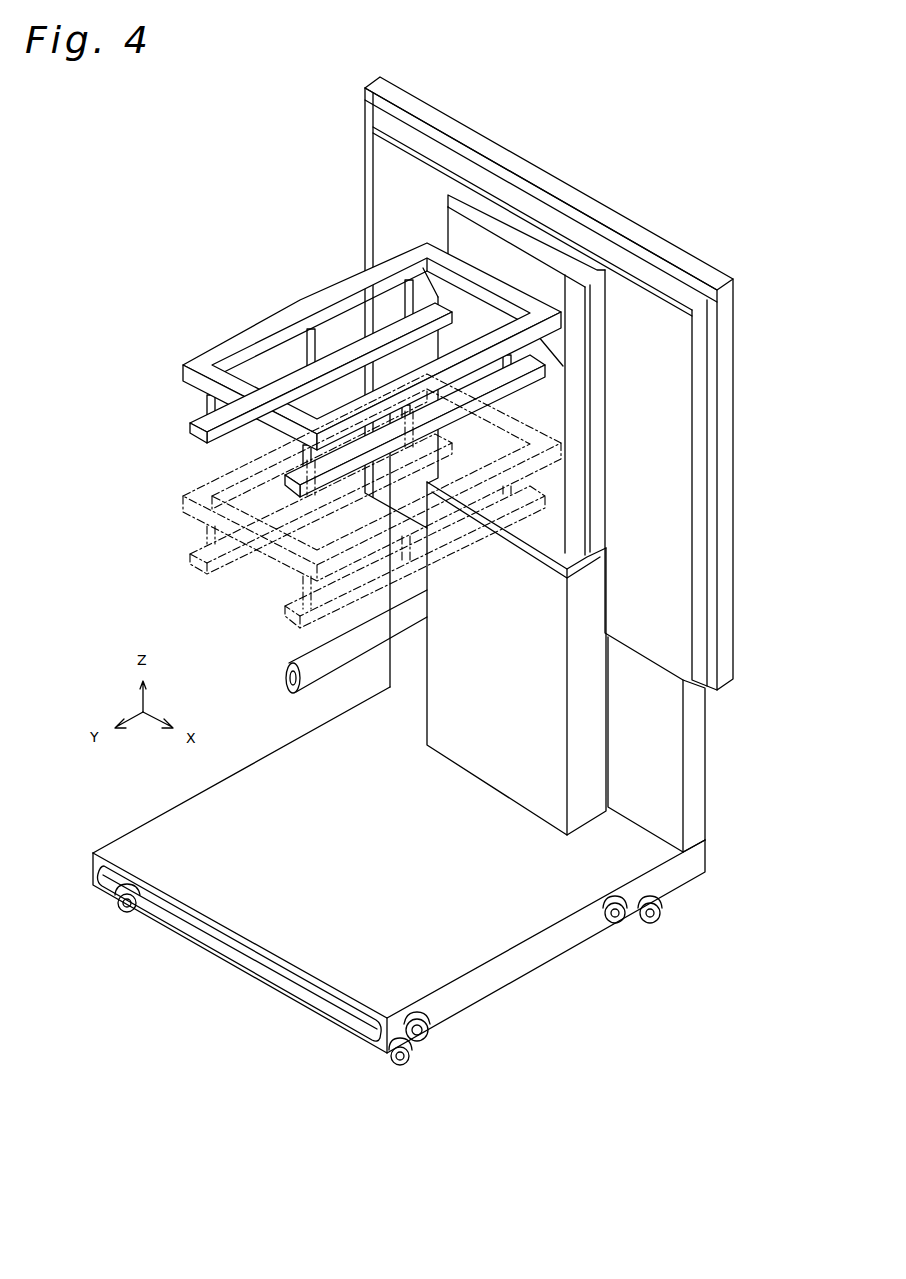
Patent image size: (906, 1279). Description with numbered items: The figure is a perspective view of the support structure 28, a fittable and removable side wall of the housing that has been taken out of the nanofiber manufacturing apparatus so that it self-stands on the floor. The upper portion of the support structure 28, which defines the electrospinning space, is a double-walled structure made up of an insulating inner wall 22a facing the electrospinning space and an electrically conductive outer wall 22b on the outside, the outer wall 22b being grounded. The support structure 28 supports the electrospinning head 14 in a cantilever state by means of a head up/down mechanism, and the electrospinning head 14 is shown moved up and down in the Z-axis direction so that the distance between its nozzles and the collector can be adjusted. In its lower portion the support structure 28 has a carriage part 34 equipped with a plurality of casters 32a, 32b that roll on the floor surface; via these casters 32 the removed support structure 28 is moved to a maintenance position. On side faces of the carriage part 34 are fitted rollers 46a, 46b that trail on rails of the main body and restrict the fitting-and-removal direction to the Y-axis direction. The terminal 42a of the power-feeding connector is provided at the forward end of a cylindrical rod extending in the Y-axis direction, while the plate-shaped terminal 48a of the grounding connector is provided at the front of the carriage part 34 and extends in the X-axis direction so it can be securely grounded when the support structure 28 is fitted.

The electrospinning head 14 is at (248, 333).
The inner wall 22a is at (647, 643).
The outer wall 22b is at (735, 512).
The support structure 28 is at (488, 152).
The casters 32 is at (510, 658).
The caster 32a is at (130, 915).
The caster 32b is at (630, 922).
The carriage part 34 is at (396, 868).
The terminal 42a is at (284, 682).
The roller 46a is at (430, 1031).
The roller 46b is at (593, 926).
The terminal 48a is at (240, 962).